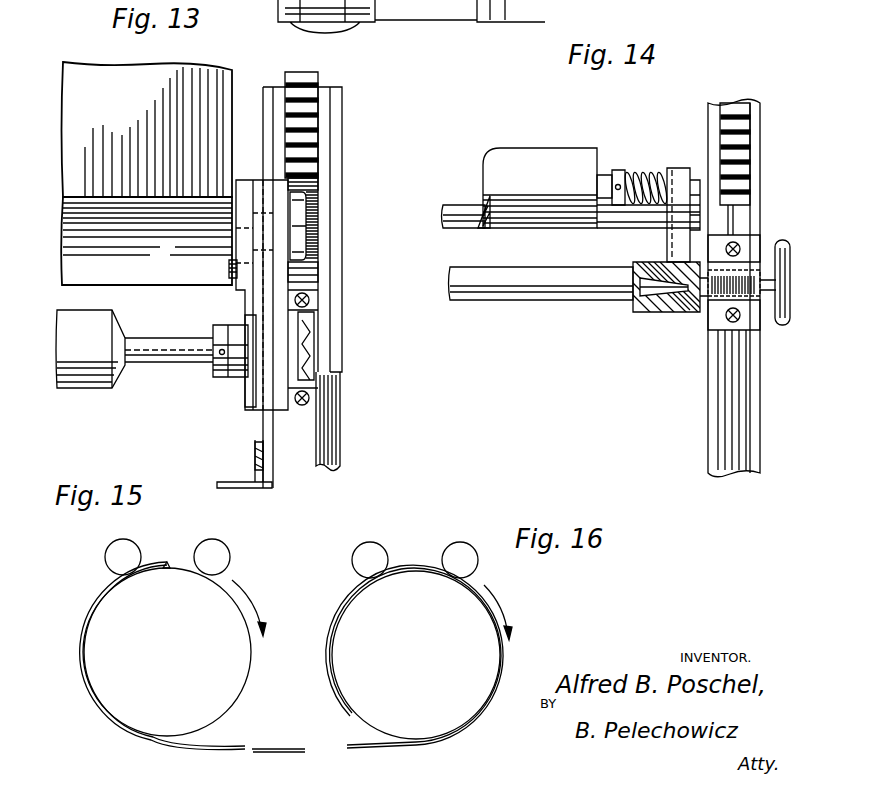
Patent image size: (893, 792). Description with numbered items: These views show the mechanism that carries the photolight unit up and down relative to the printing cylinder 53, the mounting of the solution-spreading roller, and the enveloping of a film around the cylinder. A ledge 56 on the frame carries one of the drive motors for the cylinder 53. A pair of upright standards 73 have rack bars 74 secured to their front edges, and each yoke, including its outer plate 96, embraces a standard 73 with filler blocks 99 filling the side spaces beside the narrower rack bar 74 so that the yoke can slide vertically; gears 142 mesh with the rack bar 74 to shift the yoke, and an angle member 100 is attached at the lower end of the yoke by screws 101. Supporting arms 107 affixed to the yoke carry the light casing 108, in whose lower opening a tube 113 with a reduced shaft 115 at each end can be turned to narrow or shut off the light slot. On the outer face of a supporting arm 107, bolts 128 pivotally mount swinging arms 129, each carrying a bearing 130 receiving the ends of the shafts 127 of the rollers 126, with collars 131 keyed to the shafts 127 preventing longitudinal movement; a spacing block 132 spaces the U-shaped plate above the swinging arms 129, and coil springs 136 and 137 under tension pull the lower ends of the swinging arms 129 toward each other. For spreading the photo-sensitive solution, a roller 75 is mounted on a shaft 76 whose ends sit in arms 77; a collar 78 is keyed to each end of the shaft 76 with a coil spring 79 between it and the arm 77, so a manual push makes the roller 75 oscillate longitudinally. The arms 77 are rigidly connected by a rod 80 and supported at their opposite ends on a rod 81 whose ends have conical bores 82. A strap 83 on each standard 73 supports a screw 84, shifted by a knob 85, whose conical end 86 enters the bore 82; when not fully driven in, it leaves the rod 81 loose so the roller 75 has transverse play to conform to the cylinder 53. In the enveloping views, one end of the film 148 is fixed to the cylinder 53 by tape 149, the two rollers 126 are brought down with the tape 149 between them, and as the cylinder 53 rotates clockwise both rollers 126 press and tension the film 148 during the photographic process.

In FIG. 15, the printing cylinder 53 is at (243, 676).
In FIG. 16, the printing cylinder 53 is at (490, 654).
In FIG. 13, the ledge 56 is at (428, 12).
In FIG. 13, the upright standards 73 is at (326, 414).
In FIG. 14, the upright standards 73 is at (720, 401).
In FIG. 13, the rack bars 74 is at (308, 80).
In FIG. 14, the rack bars 74 is at (738, 102).
In FIG. 14, the roller 75 is at (520, 150).
In FIG. 14, the shaft 76 is at (603, 174).
In FIG. 14, the arms 77 is at (683, 167).
In FIG. 14, the collar 78 is at (618, 170).
In FIG. 14, the coil spring 79 is at (636, 172).
In FIG. 14, the rod 80 is at (453, 204).
In FIG. 14, the rod 81 is at (487, 301).
In FIG. 14, the conical bores 82 is at (645, 306).
In FIG. 14, the strap 83 is at (750, 254).
In FIG. 14, the screw 84 is at (713, 293).
In FIG. 14, the knob 85 is at (790, 246).
In FIG. 14, the conical end 86 is at (656, 276).
In FIG. 13, the outer plate 96 is at (343, 179).
In FIG. 13, the filler blocks 99 is at (268, 92).
In FIG. 13, the angle member 100 is at (233, 482).
In FIG. 13, the screws 101 is at (254, 445).
In FIG. 13, the supporting arms 107 is at (246, 178).
In FIG. 13, the light casing 108 is at (96, 76).
In FIG. 13, the tube 113 is at (66, 250).
In FIG. 13, the reduced shaft 115 is at (233, 282).
In FIG. 13, the rollers 126 is at (88, 366).
In FIG. 15, the rollers 126 is at (108, 564).
In FIG. 16, the rollers 126 is at (446, 548).
In FIG. 13, the shafts 127 is at (141, 337).
In FIG. 13, the bolts 128 is at (302, 207).
In FIG. 13, the swinging arms 129 is at (248, 406).
In FIG. 13, the bearing 130 is at (238, 378).
In FIG. 13, the collars 131 is at (212, 334).
In FIG. 13, the spacing block 132 is at (300, 163).
In FIG. 13, the coil spring 136 is at (318, 398).
In FIG. 13, the coil spring 137 is at (310, 298).
In FIG. 13, the gears 142 is at (312, 257).
In FIG. 15, the film 148 is at (100, 720).
In FIG. 16, the film 148 is at (466, 736).
In FIG. 15, the tape 149 is at (168, 565).